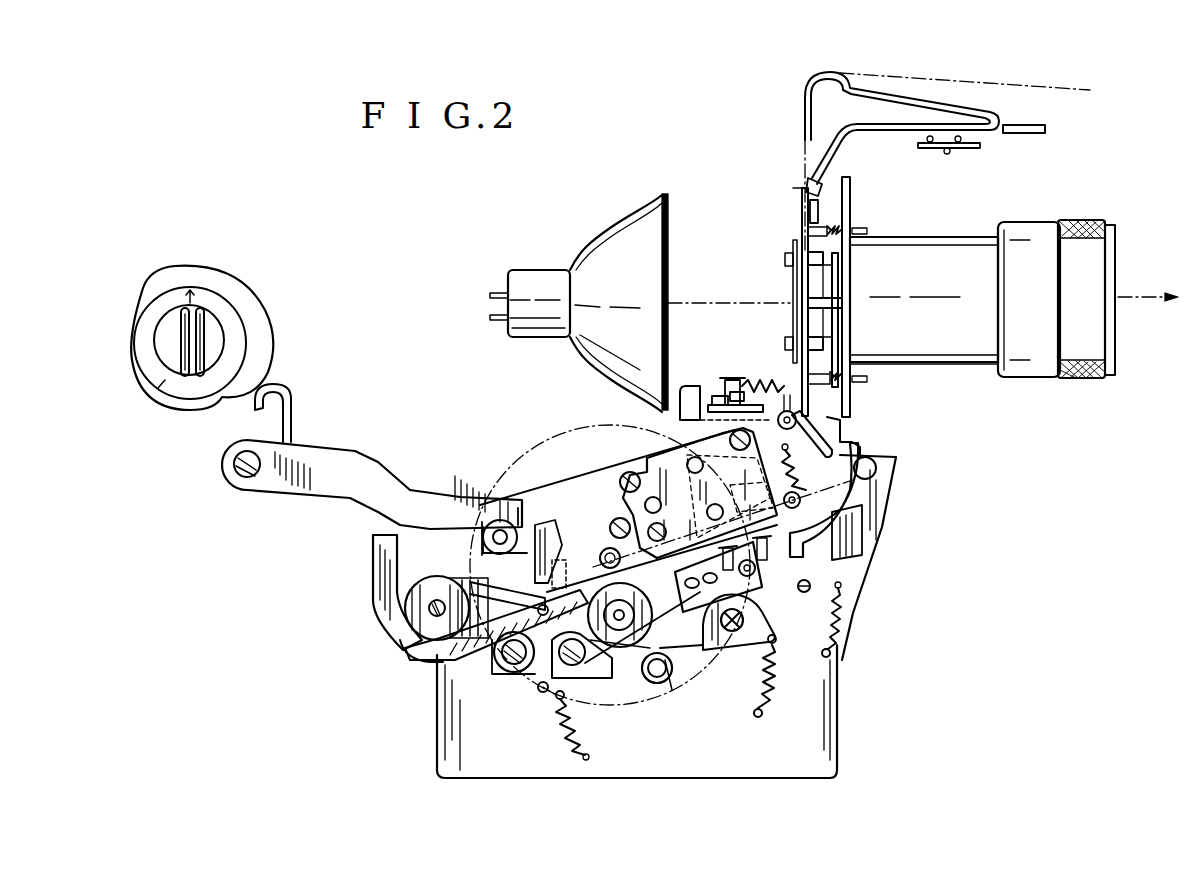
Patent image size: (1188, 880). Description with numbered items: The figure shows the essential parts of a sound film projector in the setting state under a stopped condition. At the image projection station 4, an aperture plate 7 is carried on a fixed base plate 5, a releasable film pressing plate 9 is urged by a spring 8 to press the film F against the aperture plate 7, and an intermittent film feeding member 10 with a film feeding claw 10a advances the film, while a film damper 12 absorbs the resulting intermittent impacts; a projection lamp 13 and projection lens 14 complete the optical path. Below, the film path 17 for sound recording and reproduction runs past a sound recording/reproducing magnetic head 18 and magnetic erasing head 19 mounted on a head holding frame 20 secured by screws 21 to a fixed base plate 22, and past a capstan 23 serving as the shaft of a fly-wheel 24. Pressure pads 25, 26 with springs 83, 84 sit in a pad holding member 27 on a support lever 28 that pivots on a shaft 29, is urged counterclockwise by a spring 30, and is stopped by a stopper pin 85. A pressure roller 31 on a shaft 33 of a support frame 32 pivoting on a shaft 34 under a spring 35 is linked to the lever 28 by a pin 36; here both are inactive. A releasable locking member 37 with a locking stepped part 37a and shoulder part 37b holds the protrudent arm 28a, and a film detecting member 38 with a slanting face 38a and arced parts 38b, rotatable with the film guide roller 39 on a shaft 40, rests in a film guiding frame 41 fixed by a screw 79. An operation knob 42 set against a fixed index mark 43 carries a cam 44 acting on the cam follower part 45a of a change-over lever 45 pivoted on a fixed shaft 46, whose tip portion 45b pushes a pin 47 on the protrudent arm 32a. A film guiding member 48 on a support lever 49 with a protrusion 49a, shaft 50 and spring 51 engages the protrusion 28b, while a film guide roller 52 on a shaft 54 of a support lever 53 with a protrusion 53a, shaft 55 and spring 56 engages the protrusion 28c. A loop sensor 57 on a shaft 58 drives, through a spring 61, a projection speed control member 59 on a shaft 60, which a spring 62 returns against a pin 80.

The image projection station 4 is at (788, 212).
The fixed base plate 5 is at (850, 182).
The aperture plate 7 is at (802, 212).
The spring 8 is at (840, 226).
The releasable film pressing plate 9 is at (817, 222).
The intermittent film feeding member 10 is at (806, 300).
The film feeding claw 10a is at (806, 258).
The film damper 12 is at (905, 98).
The projection lamp 13 is at (625, 232).
The projection lens 14 is at (963, 240).
The film F is at (975, 80).
The film path 17 is at (656, 641).
The sound recording/reproducing magnetic head 18 is at (708, 508).
The magnetic erasing head 19 is at (728, 492).
The head holding frame 20 is at (662, 468).
The screws 21 is at (624, 476).
The fixed base plate 22 is at (836, 705).
The capstan 23 is at (645, 506).
The fly-wheel 24 is at (572, 440).
The pressure pad 25 is at (666, 532).
The pressure pad 26 is at (752, 535).
The pad holding member 27 is at (707, 650).
The support lever 28 is at (657, 684).
The protrudent arm 28a is at (556, 572).
The protrusion 28b is at (774, 655).
The protrusion 28c is at (843, 597).
The shaft 29 is at (578, 668).
The spring 30 is at (563, 718).
The pressure roller 31 is at (620, 652).
The pressure roller support frame 32 is at (723, 645).
The protrudent arm 32a is at (512, 500).
The shaft 33 is at (625, 648).
The shaft 34 is at (740, 644).
The spring 35 is at (763, 712).
The pin 36 is at (670, 690).
The releasable locking member 37 is at (483, 540).
The locking stepped part 37a is at (545, 518).
The shoulder part 37b is at (530, 562).
The film detecting member 38 is at (494, 660).
The slanting face 38a is at (606, 548).
The arced parts 38b is at (545, 665).
The film guide roller 39 is at (425, 595).
The shaft 40 is at (437, 598).
The film guiding frame 41 is at (402, 650).
The operation knob 42 is at (214, 320).
The fixed index mark 43 is at (192, 258).
The cam 44 is at (268, 332).
The change-over lever 45 is at (352, 452).
The cam follower part 45a is at (283, 398).
The tip portion 45b is at (518, 512).
The fixed shaft 46 is at (247, 478).
The pin 47 is at (482, 530).
The film guiding member 48 is at (860, 500).
The support lever 49 is at (866, 543).
The protrusion 49a is at (822, 653).
The shaft 50 is at (833, 605).
The spring 51 is at (842, 620).
The film guide roller 52 is at (784, 489).
The support lever 53 is at (884, 485).
The protrusion 53a is at (853, 567).
The shaft 54 is at (882, 520).
The shaft 55 is at (878, 462).
The spring 56 is at (803, 480).
The loop sensor 57 is at (862, 442).
The shaft 58 is at (840, 425).
The projection speed control member 59 is at (710, 408).
The shaft 60 is at (733, 378).
The spring 61 is at (748, 392).
The spring 62 is at (763, 378).
The screw 79 is at (500, 680).
The pin 80 is at (787, 395).
The spring 83 is at (719, 624).
The spring 84 is at (817, 583).
The stopper pin 85 is at (543, 692).